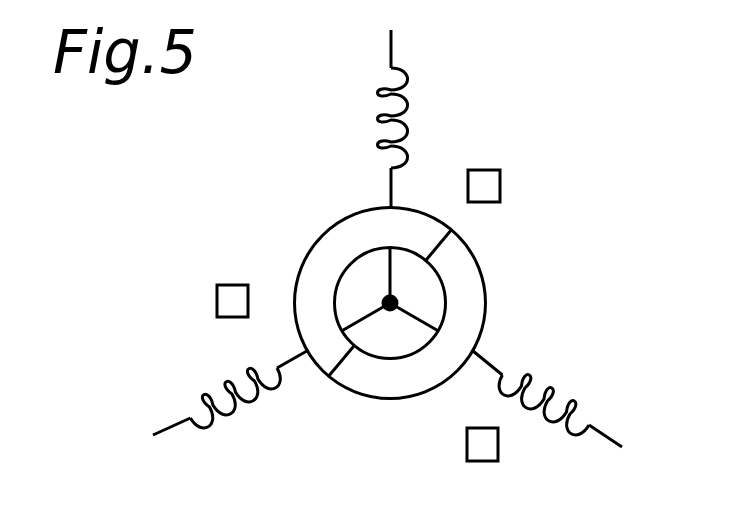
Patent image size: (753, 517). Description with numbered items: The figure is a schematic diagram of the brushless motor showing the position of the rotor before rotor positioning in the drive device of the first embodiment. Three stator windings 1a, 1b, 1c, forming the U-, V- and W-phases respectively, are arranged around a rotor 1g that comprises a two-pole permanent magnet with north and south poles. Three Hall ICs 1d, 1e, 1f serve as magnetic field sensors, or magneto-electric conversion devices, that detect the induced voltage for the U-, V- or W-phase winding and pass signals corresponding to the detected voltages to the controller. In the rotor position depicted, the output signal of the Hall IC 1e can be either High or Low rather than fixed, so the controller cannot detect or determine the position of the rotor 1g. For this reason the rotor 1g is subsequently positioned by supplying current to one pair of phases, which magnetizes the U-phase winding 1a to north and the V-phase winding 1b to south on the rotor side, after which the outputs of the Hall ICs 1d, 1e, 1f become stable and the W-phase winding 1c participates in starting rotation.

The stator winding 1a is at (379, 124).
The stator winding 1b is at (548, 427).
The stator winding 1c is at (236, 418).
The Hall IC 1d is at (239, 285).
The Hall IC 1e is at (482, 170).
The Hall IC 1f is at (467, 442).
The rotor 1g is at (485, 295).